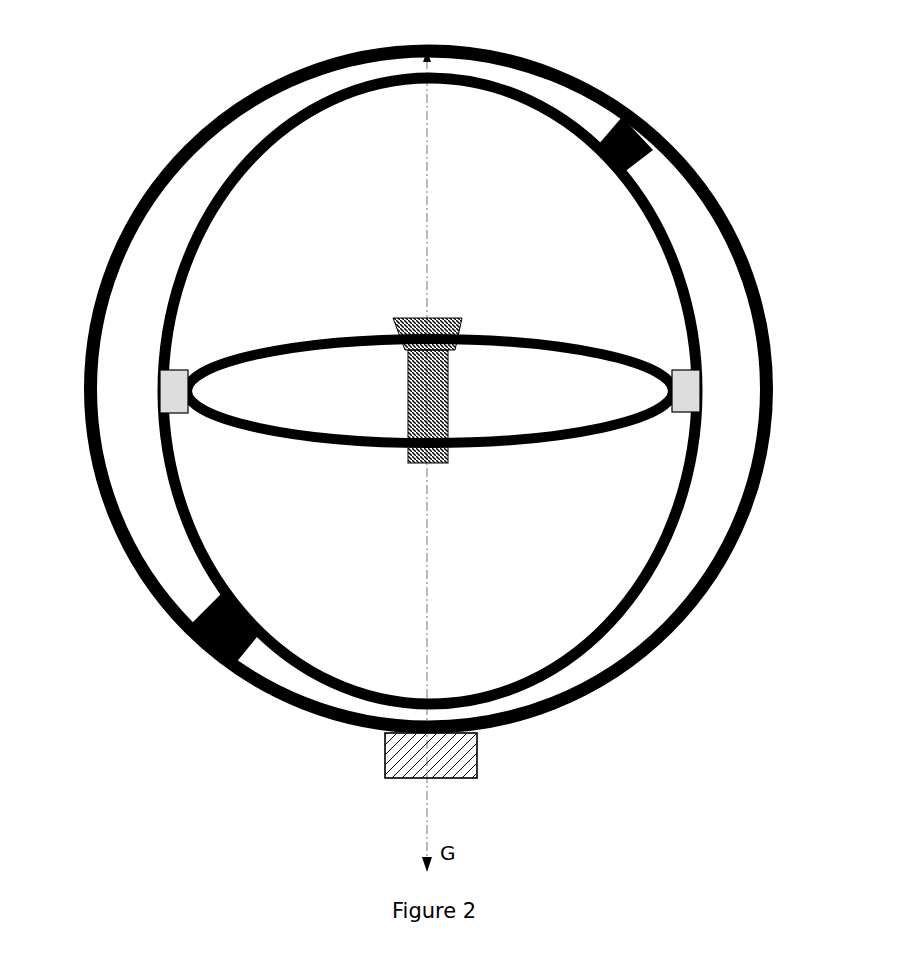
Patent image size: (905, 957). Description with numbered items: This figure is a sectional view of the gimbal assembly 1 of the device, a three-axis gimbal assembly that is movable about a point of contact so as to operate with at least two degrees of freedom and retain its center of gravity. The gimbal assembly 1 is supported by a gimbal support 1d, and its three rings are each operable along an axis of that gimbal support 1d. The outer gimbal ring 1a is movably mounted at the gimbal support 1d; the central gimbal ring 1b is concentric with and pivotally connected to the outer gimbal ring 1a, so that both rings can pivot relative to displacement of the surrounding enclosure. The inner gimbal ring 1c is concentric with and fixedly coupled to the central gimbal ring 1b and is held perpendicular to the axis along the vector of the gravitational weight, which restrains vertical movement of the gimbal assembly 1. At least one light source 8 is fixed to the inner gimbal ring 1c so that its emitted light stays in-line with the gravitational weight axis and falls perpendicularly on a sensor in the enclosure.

The gimbal assembly 1 is at (180, 81).
The outer gimbal ring 1a is at (613, 685).
The central gimbal ring 1b is at (693, 470).
The inner gimbal ring 1c is at (255, 431).
The gimbal support 1d is at (385, 760).
The light source 8 is at (407, 453).